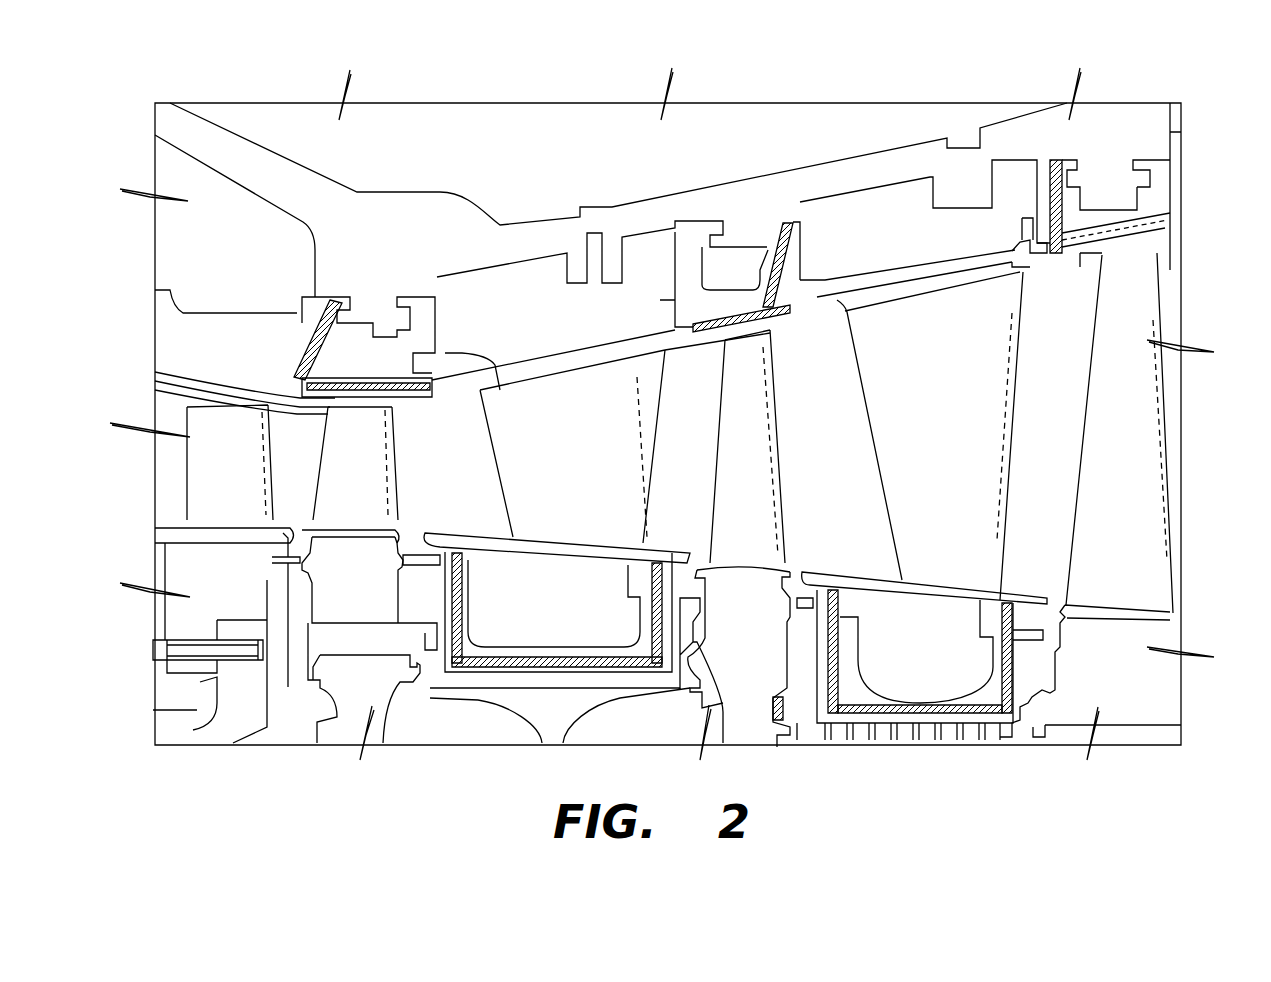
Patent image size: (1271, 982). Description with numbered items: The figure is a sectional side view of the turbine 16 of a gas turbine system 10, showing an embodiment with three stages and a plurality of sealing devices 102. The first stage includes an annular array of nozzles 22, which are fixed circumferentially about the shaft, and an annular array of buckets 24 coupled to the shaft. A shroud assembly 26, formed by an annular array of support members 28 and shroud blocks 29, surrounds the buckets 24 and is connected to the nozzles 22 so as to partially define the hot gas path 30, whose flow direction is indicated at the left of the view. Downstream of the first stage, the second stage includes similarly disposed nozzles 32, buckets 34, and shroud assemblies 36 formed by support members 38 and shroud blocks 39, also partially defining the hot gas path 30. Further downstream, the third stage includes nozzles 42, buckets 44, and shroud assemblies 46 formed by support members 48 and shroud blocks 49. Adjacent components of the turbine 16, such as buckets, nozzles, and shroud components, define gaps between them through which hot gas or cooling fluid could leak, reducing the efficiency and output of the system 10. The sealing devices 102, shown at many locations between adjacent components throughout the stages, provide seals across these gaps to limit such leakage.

The gas turbine system 10 is at (126, 140).
The turbine 16 is at (593, 128).
The nozzles 22 is at (203, 463).
The buckets 24 is at (372, 489).
The shroud assembly 26 is at (417, 303).
The support members 28 is at (403, 324).
The shroud blocks 29 is at (318, 400).
The hot gas path 30 is at (122, 451).
The nozzles 32 is at (517, 443).
The buckets 34 is at (758, 515).
The shroud assemblies 36 is at (715, 213).
The support members 38 is at (690, 232).
The shroud blocks 39 is at (712, 338).
The nozzles 42 is at (880, 383).
The buckets 44 is at (1117, 420).
The shroud assemblies 46 is at (1156, 173).
The support members 48 is at (1148, 200).
The shroud blocks 49 is at (1172, 242).
The sealing devices 102 is at (1050, 193).